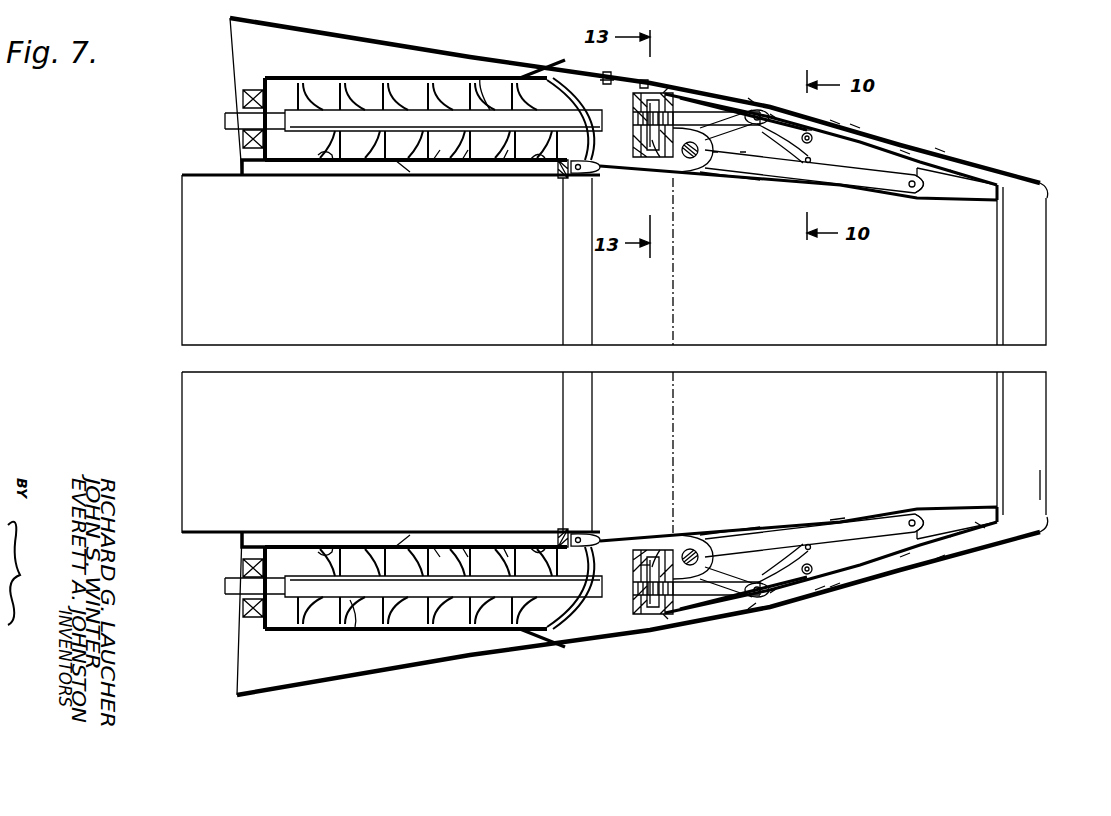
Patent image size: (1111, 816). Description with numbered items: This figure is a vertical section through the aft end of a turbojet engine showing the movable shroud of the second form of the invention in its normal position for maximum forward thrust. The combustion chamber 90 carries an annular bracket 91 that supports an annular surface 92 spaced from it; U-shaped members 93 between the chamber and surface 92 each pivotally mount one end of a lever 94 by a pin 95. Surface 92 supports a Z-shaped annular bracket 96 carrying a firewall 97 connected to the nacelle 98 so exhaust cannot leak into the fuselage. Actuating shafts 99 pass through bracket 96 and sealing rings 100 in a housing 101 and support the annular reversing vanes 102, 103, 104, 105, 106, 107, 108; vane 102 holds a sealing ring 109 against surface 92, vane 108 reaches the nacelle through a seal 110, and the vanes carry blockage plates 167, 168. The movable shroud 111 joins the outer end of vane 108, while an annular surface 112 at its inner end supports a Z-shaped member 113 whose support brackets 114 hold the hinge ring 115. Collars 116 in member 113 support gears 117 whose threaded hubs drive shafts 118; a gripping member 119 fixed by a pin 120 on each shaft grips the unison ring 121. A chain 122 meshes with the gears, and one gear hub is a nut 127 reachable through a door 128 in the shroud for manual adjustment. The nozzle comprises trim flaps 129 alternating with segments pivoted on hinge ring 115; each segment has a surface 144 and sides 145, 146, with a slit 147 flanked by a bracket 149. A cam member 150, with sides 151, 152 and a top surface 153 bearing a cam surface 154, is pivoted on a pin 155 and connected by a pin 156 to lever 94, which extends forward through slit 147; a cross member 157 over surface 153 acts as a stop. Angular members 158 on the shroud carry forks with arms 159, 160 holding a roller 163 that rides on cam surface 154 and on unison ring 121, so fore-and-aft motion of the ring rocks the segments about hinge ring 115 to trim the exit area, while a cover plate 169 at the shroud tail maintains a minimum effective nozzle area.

The combustion chamber 90 is at (372, 176).
The annular bracket 91 is at (236, 172).
The annular surface 92 is at (405, 172).
The U-shaped member 93 is at (560, 178).
The lever 94 is at (712, 180).
The pin 95 is at (578, 172).
The Z-shaped annular bracket 96 is at (242, 155).
The firewall 97 is at (296, 78).
The nacelle 98 is at (386, 43).
The actuating shaft 99 is at (235, 117).
The sealing ring 100 is at (260, 92).
The housing 101 is at (248, 98).
The reversing vane 102 is at (352, 162).
The reversing vane 103 is at (382, 162).
The reversing vane 104 is at (435, 162).
The reversing vane 105 is at (457, 162).
The reversing vane 106 is at (500, 162).
The reversing vane 107 is at (522, 162).
The reversing vane 108 is at (569, 84).
The sealing ring 109 is at (328, 163).
The seal 110 is at (545, 63).
The movable shroud 111 is at (940, 150).
The annular surface 112 is at (633, 160).
The annular Z-shaped member 113 is at (668, 92).
The support bracket 114 is at (728, 110).
The hinge ring 115 is at (690, 160).
The collar 116 is at (701, 112).
The gear 117 is at (655, 160).
The shaft 118 is at (740, 114).
The gripping member 119 is at (802, 128).
The pin 120 is at (771, 114).
The unison ring 121 is at (855, 126).
The chain 122 is at (640, 565).
The nut 127 is at (645, 133).
The door 128 is at (645, 82).
The trim flap 129 is at (611, 76).
The segment surface 144 is at (967, 201).
The segment side 145 is at (982, 527).
The segment side 146 is at (978, 182).
The slit 147 is at (918, 196).
The bracket 149 is at (729, 151).
The cam member 150 is at (880, 198).
The cam member side 151 is at (838, 520).
The cam member side 152 is at (838, 190).
The top surface 153 is at (905, 150).
The cam surface 154 is at (785, 170).
The pin 155 is at (808, 165).
The pin 156 is at (955, 167).
The top cross member 157 is at (880, 142).
The angular member 158 is at (750, 99).
The fork arm 159 is at (820, 590).
The fork arm 160 is at (808, 130).
The roller 163 is at (836, 122).
The blockage plate 167 is at (480, 78).
The blockage plate 168 is at (355, 629).
The cover plate 169 is at (1040, 484).